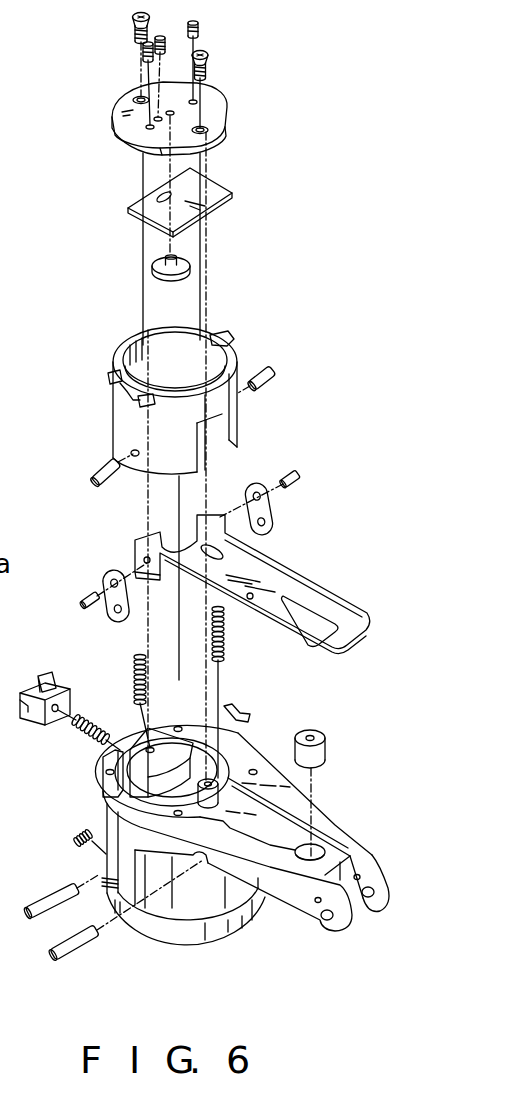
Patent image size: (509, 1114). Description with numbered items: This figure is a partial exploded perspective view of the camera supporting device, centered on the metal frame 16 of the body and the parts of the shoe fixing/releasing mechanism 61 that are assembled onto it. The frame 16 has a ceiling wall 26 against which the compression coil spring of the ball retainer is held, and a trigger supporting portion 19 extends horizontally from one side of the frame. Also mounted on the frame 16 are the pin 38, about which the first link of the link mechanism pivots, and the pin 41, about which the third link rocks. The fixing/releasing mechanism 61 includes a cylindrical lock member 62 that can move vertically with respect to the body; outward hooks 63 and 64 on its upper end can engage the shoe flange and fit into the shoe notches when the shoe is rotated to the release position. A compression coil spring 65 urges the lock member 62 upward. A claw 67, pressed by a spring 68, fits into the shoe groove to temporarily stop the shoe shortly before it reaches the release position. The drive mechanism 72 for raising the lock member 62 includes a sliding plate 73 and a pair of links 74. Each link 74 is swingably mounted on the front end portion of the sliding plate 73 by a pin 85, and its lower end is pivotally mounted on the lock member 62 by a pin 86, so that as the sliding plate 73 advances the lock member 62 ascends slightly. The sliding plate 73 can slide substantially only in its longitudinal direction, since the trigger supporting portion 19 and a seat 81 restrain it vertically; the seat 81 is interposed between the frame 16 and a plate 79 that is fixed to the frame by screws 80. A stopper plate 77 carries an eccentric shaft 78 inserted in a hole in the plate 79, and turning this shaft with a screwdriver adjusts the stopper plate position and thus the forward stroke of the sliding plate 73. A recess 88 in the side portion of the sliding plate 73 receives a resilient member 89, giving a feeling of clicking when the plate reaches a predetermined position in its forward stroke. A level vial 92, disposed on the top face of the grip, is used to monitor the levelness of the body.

The screws 80 is at (134, 31).
The plate 79 is at (218, 117).
The seat 81 is at (224, 186).
The eccentric shaft 78 is at (165, 258).
The stopper plate 77 is at (155, 270).
The fixing/releasing mechanism 61 is at (142, 394).
The cylindrical lock member 62 is at (114, 422).
The outward hook 63 is at (226, 338).
The outward hook 64 is at (138, 400).
The pin 86 is at (270, 384).
The pin 85 is at (300, 482).
The links 74 is at (271, 511).
The sliding plate 73 is at (261, 596).
The drive mechanism 72 is at (348, 639).
The recess 88 is at (251, 599).
The compression coil spring 65 is at (225, 648).
The claw 67 is at (52, 673).
The spring 68 is at (79, 727).
The resilient member 89 is at (250, 714).
The level vial 92 is at (327, 742).
The ceiling wall 26 is at (102, 812).
The trigger supporting portion 19 is at (322, 815).
The pin 38 is at (38, 903).
The pin 41 is at (80, 945).
The metal frame 16 is at (168, 942).